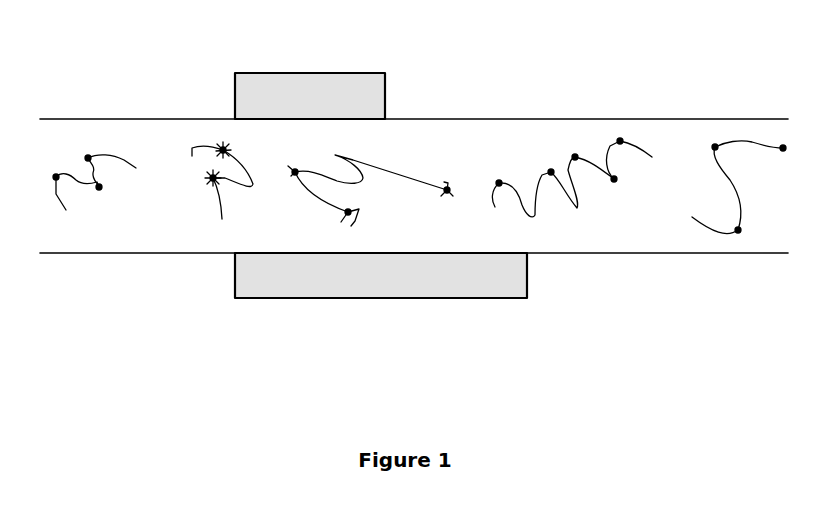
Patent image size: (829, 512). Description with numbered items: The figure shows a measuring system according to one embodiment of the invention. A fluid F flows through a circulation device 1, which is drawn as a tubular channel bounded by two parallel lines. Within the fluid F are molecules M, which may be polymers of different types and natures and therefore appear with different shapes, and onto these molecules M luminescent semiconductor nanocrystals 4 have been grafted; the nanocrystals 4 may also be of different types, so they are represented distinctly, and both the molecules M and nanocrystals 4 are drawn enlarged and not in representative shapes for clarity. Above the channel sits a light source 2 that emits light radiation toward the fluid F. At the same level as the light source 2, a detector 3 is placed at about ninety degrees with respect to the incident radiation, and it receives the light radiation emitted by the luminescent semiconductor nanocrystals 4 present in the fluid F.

The circulation device 1 is at (72, 118).
The light source 2 is at (300, 87).
The detector 3 is at (336, 274).
The luminescent semiconductor nanocrystals 4 is at (197, 178).
The fluid F is at (172, 140).
The molecules M is at (732, 174).